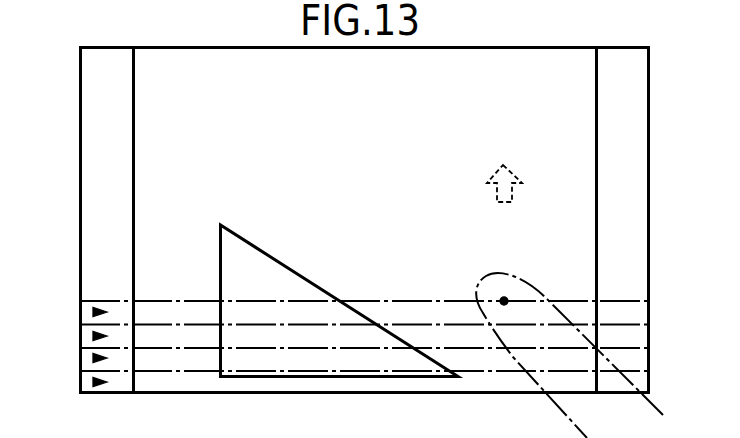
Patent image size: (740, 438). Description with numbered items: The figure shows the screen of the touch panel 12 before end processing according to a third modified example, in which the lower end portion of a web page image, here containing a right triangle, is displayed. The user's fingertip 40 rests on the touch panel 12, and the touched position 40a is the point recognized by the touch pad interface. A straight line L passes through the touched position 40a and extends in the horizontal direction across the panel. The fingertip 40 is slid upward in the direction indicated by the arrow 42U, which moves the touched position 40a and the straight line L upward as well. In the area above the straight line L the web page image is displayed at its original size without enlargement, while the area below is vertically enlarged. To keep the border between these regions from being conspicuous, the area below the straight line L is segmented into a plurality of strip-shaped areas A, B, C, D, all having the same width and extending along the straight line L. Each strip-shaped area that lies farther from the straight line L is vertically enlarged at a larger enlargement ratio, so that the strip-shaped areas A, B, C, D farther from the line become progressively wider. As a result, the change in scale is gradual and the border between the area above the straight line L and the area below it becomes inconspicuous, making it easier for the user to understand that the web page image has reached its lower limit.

The touch panel 12 is at (80, 252).
The straight line L is at (173, 299).
The strip-shaped area A is at (94, 312).
The strip-shaped area B is at (94, 336).
The strip-shaped area C is at (94, 358).
The strip-shaped area D is at (94, 382).
The arrow 42U is at (515, 175).
The fingertip 40 is at (660, 402).
The touched position 40a is at (506, 298).